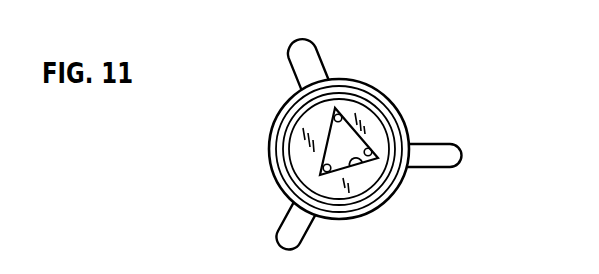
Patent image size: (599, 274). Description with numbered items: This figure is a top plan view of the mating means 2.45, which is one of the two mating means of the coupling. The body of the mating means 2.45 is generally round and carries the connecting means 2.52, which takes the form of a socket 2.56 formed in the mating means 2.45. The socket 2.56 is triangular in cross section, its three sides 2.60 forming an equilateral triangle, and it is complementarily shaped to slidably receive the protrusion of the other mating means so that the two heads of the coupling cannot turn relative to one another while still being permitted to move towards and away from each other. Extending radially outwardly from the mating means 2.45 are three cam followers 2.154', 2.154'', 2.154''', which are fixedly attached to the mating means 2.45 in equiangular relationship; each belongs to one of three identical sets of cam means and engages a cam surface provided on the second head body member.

The mating means 2.45 is at (414, 191).
The cam follower 2.154' is at (473, 160).
The cam follower 2.154'' is at (249, 227).
The cam follower 2.154''' is at (354, 56).
The socket 2.56 is at (336, 109).
The connecting means 2.52 is at (378, 127).
The sides of socket 2.60 is at (321, 174).